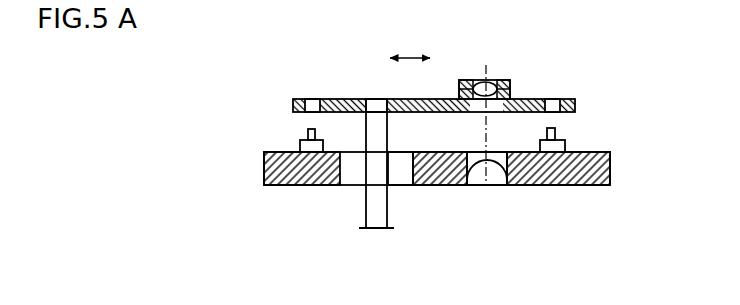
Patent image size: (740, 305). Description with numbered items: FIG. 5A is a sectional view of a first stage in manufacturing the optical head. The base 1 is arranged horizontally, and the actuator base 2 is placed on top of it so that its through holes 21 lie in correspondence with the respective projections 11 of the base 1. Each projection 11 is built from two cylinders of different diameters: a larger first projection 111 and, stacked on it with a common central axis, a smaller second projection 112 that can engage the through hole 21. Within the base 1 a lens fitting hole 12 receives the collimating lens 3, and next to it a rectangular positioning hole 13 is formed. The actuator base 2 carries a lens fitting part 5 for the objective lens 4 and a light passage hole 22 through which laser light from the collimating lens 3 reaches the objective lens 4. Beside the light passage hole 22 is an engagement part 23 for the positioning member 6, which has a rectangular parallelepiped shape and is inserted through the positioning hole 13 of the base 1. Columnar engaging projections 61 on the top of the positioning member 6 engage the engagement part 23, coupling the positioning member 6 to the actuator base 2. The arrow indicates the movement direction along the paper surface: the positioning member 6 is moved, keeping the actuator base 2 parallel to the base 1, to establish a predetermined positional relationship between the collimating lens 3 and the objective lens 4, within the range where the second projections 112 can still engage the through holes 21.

The base 1 is at (327, 185).
The projection 11 is at (266, 157).
The first projection 111 is at (300, 148).
The second projection 112 is at (308, 130).
The lens fitting hole 12 is at (509, 184).
The positioning hole 13 is at (405, 175).
The actuator base 2 is at (291, 101).
The through hole 21 is at (307, 100).
The light passage hole 22 is at (512, 85).
The engagement part 23 is at (373, 100).
The collimating lens 3 is at (480, 172).
The objective lens 4 is at (489, 83).
The lens fitting part 5 is at (466, 80).
The positioning member 6 is at (367, 208).
The engaging projection 61 is at (364, 103).